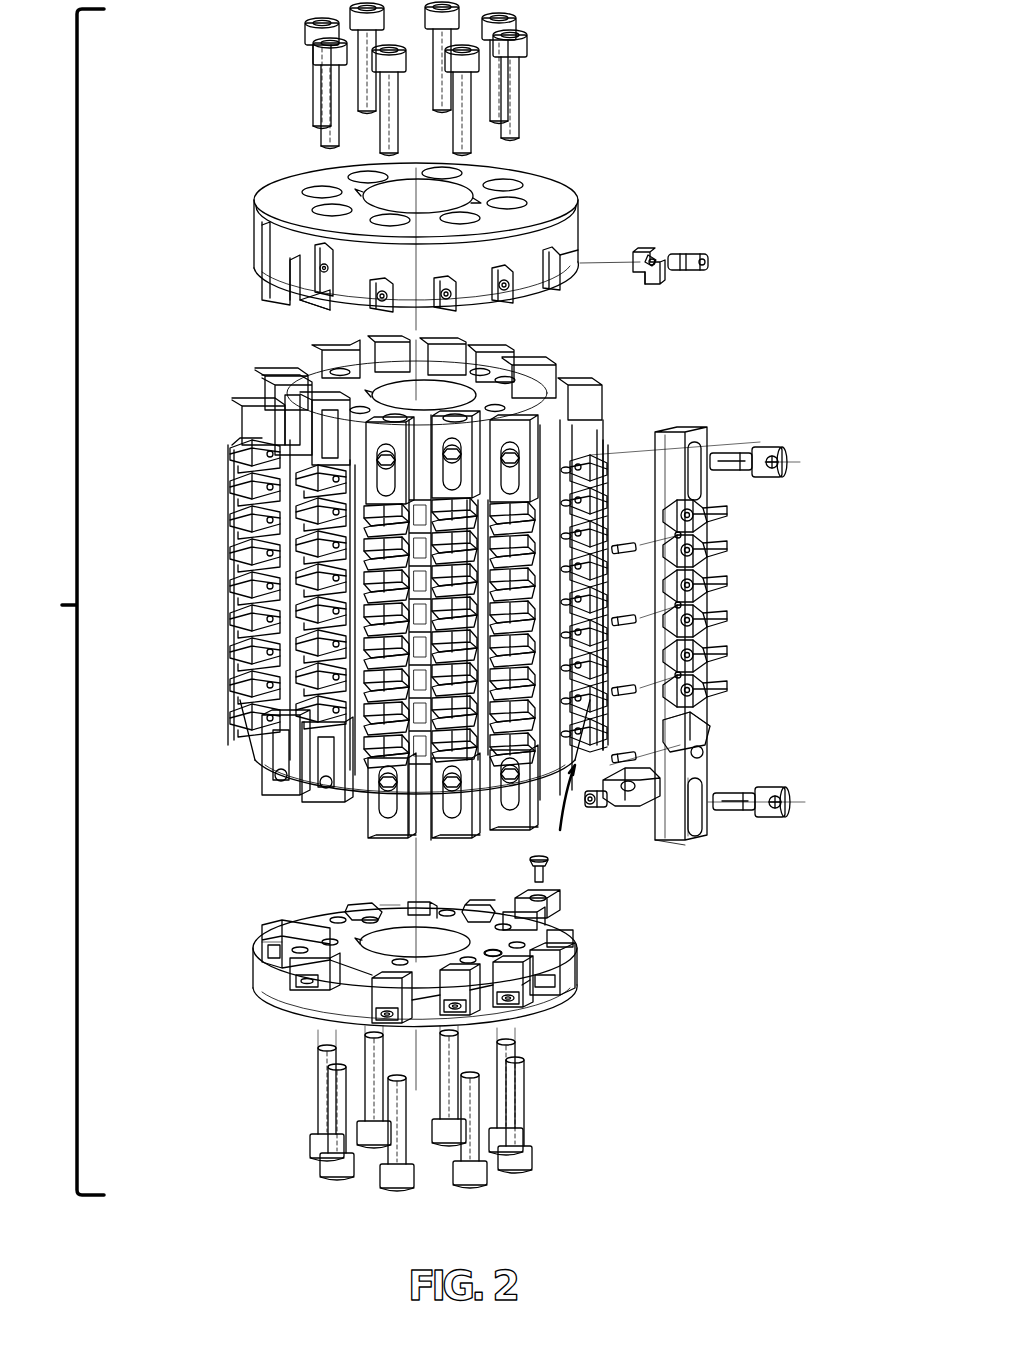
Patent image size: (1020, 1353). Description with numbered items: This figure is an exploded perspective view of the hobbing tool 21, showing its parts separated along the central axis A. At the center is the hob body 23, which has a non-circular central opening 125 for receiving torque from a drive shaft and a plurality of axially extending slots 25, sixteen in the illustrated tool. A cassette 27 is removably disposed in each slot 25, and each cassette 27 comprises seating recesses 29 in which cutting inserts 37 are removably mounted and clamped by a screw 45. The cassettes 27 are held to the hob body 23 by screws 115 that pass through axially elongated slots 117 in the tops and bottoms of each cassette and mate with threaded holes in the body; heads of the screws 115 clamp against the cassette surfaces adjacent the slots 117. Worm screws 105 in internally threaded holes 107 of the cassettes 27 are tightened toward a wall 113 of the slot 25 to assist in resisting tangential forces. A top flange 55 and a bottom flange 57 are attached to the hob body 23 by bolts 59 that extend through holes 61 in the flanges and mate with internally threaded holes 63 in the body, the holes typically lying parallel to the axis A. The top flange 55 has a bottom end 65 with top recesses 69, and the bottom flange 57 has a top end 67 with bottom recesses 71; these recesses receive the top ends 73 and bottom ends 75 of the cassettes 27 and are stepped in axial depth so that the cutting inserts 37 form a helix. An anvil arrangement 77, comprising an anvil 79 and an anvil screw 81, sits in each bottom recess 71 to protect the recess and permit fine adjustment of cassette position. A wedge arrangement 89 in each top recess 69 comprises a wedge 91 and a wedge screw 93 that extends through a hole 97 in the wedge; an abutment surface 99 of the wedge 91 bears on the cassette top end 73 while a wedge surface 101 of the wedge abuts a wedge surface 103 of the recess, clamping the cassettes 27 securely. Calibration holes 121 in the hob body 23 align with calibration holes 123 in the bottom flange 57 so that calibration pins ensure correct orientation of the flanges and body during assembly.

The hobbing tool 21 is at (62, 602).
The hob body 23 is at (405, 574).
The axially extending slot 25 is at (550, 809).
The cassette 27 is at (697, 490).
The seating recess 29 is at (713, 768).
The cutting insert 37 is at (633, 820).
The screw 45 is at (593, 818).
The top flange 55 is at (372, 217).
The bottom flange 57 is at (240, 983).
The bolts 59 is at (513, 98).
The holes 61 is at (510, 185).
The holes 63 is at (450, 360).
The bottom end 65 is at (302, 305).
The top end 67 is at (352, 945).
The top recesses 69 is at (276, 288).
The bottom recesses 71 is at (392, 910).
The top end 73 is at (712, 627).
The bottom end 75 is at (683, 845).
The anvil arrangement 77 is at (631, 921).
The anvil 79 is at (564, 912).
The anvil screw 81 is at (555, 888).
The wedge arrangement 89 is at (671, 251).
The wedge 91 is at (632, 244).
The wedge screw 93 is at (706, 258).
The hole 97 is at (655, 262).
The abutment surface 99 is at (650, 283).
The wedge surface 101 is at (652, 262).
The wedge surface 103 is at (282, 240).
The worm screws 105 is at (627, 525).
The holes 107 is at (685, 540).
The wall 113 is at (553, 468).
The screws 115 is at (748, 458).
The axially elongated slots 117 is at (700, 450).
The calibration holes 121 is at (487, 405).
The calibration holes 123 is at (492, 948).
The non-circular central opening 125 is at (410, 400).
The axis A is at (420, 880).